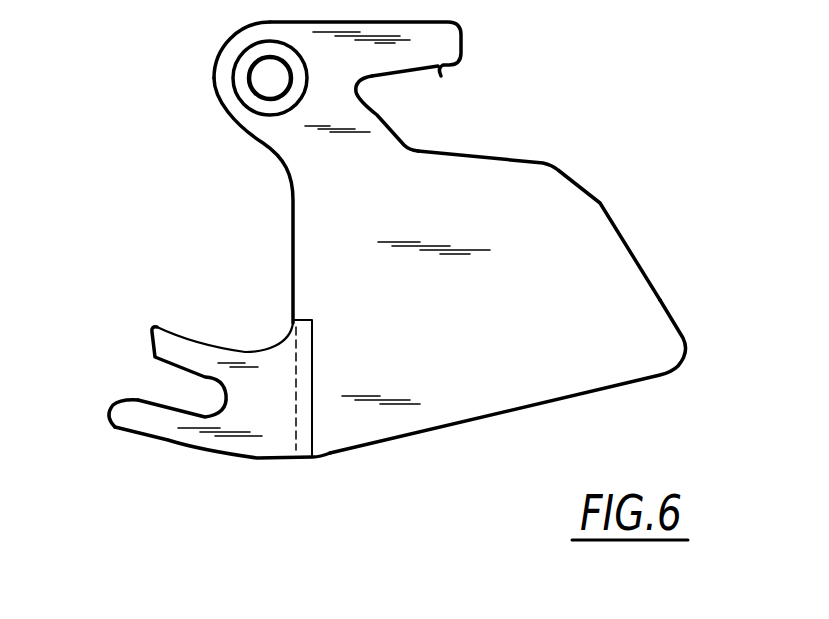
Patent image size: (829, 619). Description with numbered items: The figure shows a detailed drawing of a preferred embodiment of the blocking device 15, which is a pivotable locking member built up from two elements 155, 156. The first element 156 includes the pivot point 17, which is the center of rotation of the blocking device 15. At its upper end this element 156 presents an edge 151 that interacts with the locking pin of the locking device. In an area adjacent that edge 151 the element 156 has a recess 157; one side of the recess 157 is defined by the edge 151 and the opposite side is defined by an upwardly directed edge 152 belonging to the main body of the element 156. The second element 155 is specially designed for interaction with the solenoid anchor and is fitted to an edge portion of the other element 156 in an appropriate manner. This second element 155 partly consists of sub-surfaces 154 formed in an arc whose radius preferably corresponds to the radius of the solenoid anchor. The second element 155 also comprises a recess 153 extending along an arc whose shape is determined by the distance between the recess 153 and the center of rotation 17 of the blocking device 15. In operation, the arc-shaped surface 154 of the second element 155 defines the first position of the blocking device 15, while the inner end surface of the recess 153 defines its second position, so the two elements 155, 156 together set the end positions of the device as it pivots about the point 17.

The blocking device 15 is at (612, 175).
The pivot point 17 is at (263, 72).
The edge 151 is at (446, 79).
The upwardly directed edge 152 is at (413, 148).
The recess 153 is at (195, 395).
The sub-surfaces 154 is at (135, 398).
The second element 155 is at (260, 447).
The first element 156 is at (541, 390).
The recess 157 is at (367, 88).